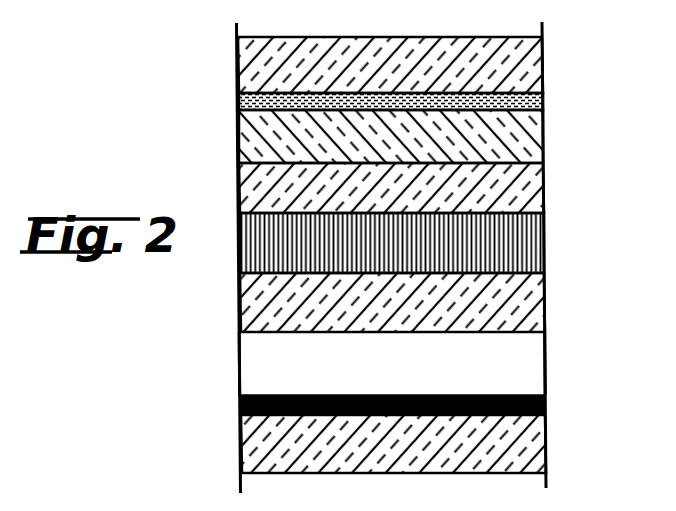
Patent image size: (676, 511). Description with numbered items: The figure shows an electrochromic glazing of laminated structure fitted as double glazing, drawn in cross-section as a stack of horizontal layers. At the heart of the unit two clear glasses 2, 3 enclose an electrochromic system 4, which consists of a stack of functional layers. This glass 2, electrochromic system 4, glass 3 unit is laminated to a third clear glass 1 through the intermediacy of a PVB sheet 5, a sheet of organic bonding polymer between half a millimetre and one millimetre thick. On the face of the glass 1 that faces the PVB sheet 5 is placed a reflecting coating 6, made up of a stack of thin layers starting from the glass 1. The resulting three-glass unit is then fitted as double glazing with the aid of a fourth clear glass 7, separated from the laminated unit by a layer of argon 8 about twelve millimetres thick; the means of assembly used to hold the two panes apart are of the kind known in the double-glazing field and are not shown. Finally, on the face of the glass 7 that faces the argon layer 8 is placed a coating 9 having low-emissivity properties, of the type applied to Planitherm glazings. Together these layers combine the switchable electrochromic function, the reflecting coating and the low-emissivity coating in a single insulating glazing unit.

The third clear glass 1 is at (542, 60).
The clear glass 2 is at (518, 183).
The clear glass 3 is at (520, 292).
The electrochromic system 4 is at (518, 236).
The PVB sheet 5 is at (520, 135).
The reflecting coating 6 is at (520, 100).
The fourth clear glass 7 is at (520, 435).
The argon layer 8 is at (518, 352).
The low-emissivity coating 9 is at (545, 401).